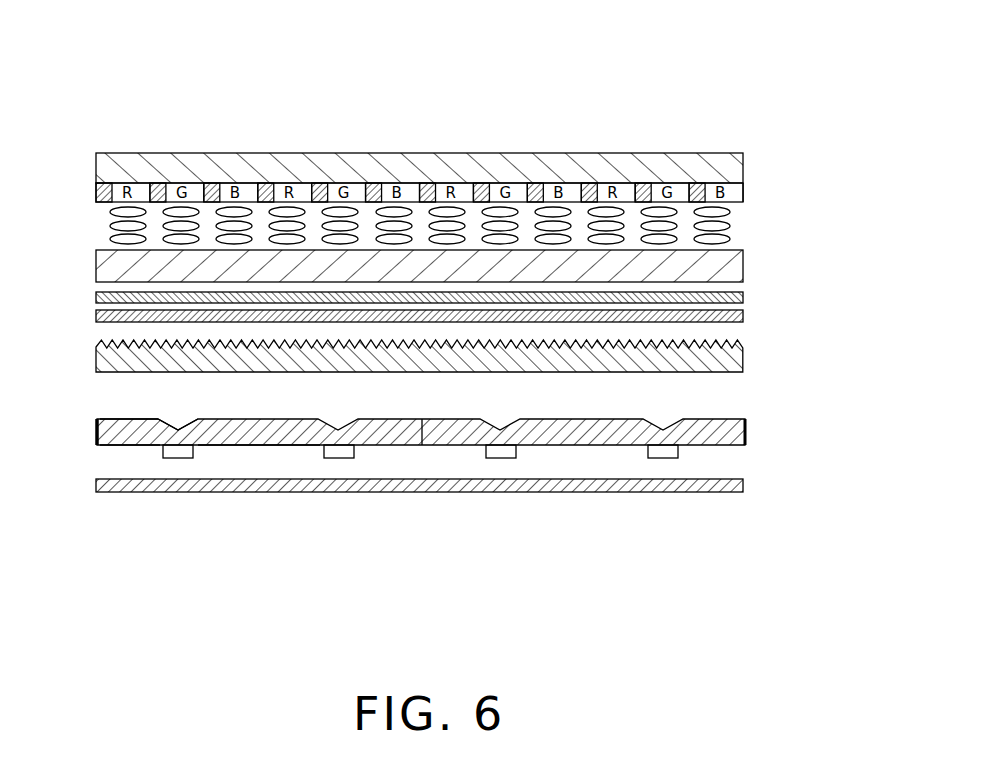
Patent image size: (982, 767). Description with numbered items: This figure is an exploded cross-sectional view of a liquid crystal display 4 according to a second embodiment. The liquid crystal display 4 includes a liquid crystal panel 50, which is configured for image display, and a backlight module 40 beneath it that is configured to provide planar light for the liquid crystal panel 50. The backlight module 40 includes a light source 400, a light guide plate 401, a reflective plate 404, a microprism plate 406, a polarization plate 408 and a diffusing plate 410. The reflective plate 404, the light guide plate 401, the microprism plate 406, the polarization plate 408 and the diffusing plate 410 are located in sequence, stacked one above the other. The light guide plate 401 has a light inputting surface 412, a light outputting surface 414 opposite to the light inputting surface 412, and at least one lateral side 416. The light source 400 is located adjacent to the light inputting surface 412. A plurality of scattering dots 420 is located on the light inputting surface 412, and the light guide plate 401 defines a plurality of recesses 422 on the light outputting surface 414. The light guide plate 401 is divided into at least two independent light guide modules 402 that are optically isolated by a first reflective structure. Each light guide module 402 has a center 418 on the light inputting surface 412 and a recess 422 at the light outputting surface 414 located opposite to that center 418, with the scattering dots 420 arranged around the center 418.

The liquid crystal display 4 is at (328, 65).
The liquid crystal panel 50 is at (757, 153).
The backlight module 40 is at (451, 393).
The diffusing plate 410 is at (744, 297).
The polarization plate 408 is at (744, 317).
The microprism plate 406 is at (744, 366).
The independent light guide module 402 is at (427, 432).
The light guide plate 401 is at (754, 416).
The recess 422 is at (338, 418).
The light outputting surface 414 is at (112, 412).
The lateral side 416 is at (90, 423).
The light inputting surface 412 is at (99, 453).
The scattering dots 420 is at (223, 448).
The light source 400 is at (459, 462).
The center 418 is at (663, 447).
The reflective plate 404 is at (455, 492).